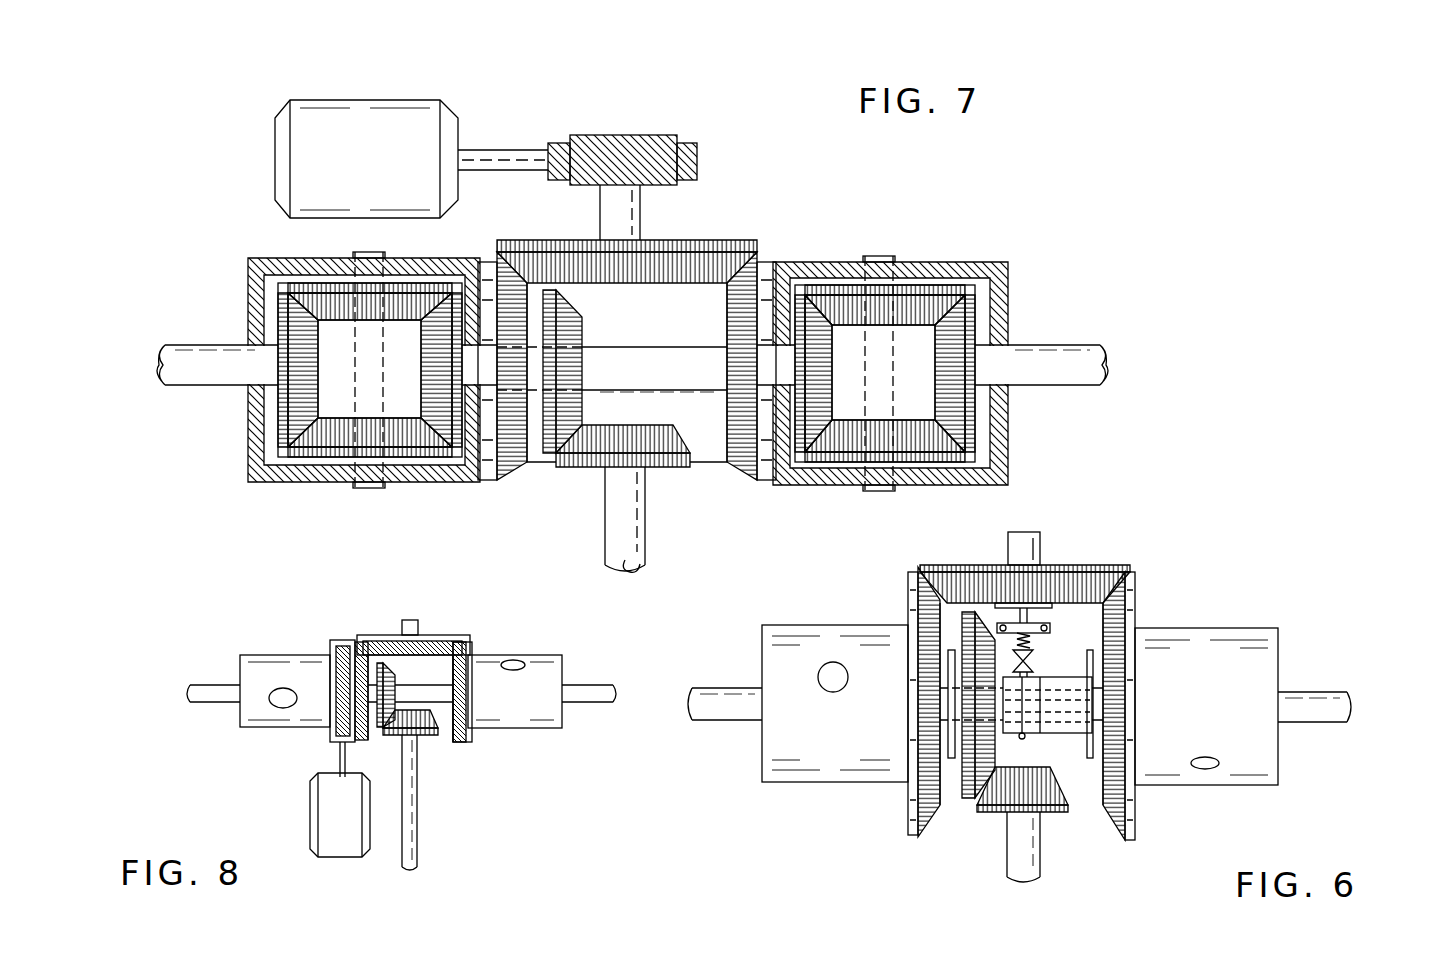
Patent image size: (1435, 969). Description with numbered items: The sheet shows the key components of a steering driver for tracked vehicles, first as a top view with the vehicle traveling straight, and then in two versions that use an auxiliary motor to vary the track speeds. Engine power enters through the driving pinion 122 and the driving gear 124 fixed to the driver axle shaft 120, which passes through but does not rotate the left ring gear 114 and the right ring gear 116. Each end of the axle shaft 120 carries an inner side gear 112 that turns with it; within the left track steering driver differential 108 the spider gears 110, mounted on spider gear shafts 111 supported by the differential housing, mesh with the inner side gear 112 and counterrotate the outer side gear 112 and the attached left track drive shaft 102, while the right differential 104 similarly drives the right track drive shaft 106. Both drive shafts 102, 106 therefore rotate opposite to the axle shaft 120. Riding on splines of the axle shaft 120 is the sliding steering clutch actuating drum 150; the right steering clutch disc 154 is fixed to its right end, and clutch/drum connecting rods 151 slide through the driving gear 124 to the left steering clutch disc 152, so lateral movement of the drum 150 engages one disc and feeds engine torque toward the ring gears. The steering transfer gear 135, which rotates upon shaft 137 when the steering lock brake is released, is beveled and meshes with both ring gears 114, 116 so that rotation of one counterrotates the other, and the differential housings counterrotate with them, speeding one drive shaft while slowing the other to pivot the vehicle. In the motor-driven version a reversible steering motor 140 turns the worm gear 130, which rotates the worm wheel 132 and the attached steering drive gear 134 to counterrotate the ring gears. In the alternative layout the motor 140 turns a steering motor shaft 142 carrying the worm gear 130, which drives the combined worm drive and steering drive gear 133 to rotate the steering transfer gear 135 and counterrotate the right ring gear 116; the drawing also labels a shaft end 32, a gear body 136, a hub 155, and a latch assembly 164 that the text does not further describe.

In FIG. 7, the output shaft 32 is at (645, 565).
In FIG. 8, the output shaft 32 is at (418, 867).
In FIG. 7, the left track drive shaft 102 is at (150, 365).
In FIG. 8, the left track drive shaft 102 is at (190, 693).
In FIG. 6, the left track drive shaft 102 is at (692, 695).
In FIG. 7, the right differential 104 is at (1008, 262).
In FIG. 8, the right differential 104 is at (562, 658).
In FIG. 6, the right differential 104 is at (1278, 785).
In FIG. 7, the right track drive shaft 106 is at (1105, 370).
In FIG. 8, the right track drive shaft 106 is at (600, 705).
In FIG. 6, the right track drive shaft 106 is at (1347, 707).
In FIG. 7, the left track steering driver differential 108 is at (248, 262).
In FIG. 8, the left track steering driver differential 108 is at (240, 660).
In FIG. 6, the left track steering driver differential 108 is at (762, 780).
In FIG. 7, the spider gears 110 is at (330, 295).
In FIG. 7, the spider gear shafts 111 is at (867, 348).
In FIG. 7, the side gears 112 is at (277, 420).
In FIG. 7, the left ring gear 114 is at (508, 478).
In FIG. 6, the left ring gear 114 is at (908, 810).
In FIG. 7, the right ring gear 116 is at (757, 485).
In FIG. 8, the right ring gear 116 is at (470, 742).
In FIG. 6, the right ring gear 116 is at (1135, 835).
In FIG. 7, the driver axle shaft 120 is at (683, 393).
In FIG. 6, the driver axle shaft 120 is at (1098, 735).
In FIG. 7, the driving pinion 122 is at (648, 480).
In FIG. 8, the driving pinion 122 is at (430, 735).
In FIG. 6, the driving pinion 122 is at (1015, 815).
In FIG. 7, the driving gear 124 is at (582, 320).
In FIG. 8, the driving gear 124 is at (378, 700).
In FIG. 6, the driving gear 124 is at (965, 800).
In FIG. 7, the worm gear 130 is at (625, 135).
In FIG. 8, the worm gear 130 is at (335, 690).
In FIG. 7, the worm wheel 132 is at (697, 160).
In FIG. 8, the combined worm drive and steering drive gear 133 is at (357, 645).
In FIG. 7, the steering drive gear 134 is at (757, 242).
In FIG. 8, the steering transfer gear 135 is at (465, 640).
In FIG. 6, the steering transfer gear 135 is at (1130, 568).
In FIG. 7, the ring gear shaft 136 is at (640, 210).
In FIG. 8, the shaft 137 is at (425, 596).
In FIG. 6, the shaft 137 is at (1008, 545).
In FIG. 7, the steering motor 140 is at (348, 100).
In FIG. 8, the steering motor 140 is at (310, 818).
In FIG. 7, the steering motor shaft 142 is at (495, 150).
In FIG. 8, the steering motor shaft 142 is at (340, 765).
In FIG. 6, the sliding steering clutch actuating drum 150 is at (1090, 760).
In FIG. 6, the clutch/drum connecting rods 151 is at (1010, 737).
In FIG. 6, the left steering clutch disc 152 is at (950, 760).
In FIG. 6, the right steering clutch disc 154 is at (1050, 630).
In FIG. 6, the hub 155 is at (1053, 695).
In FIG. 6, the latch mechanism 164 is at (1082, 565).